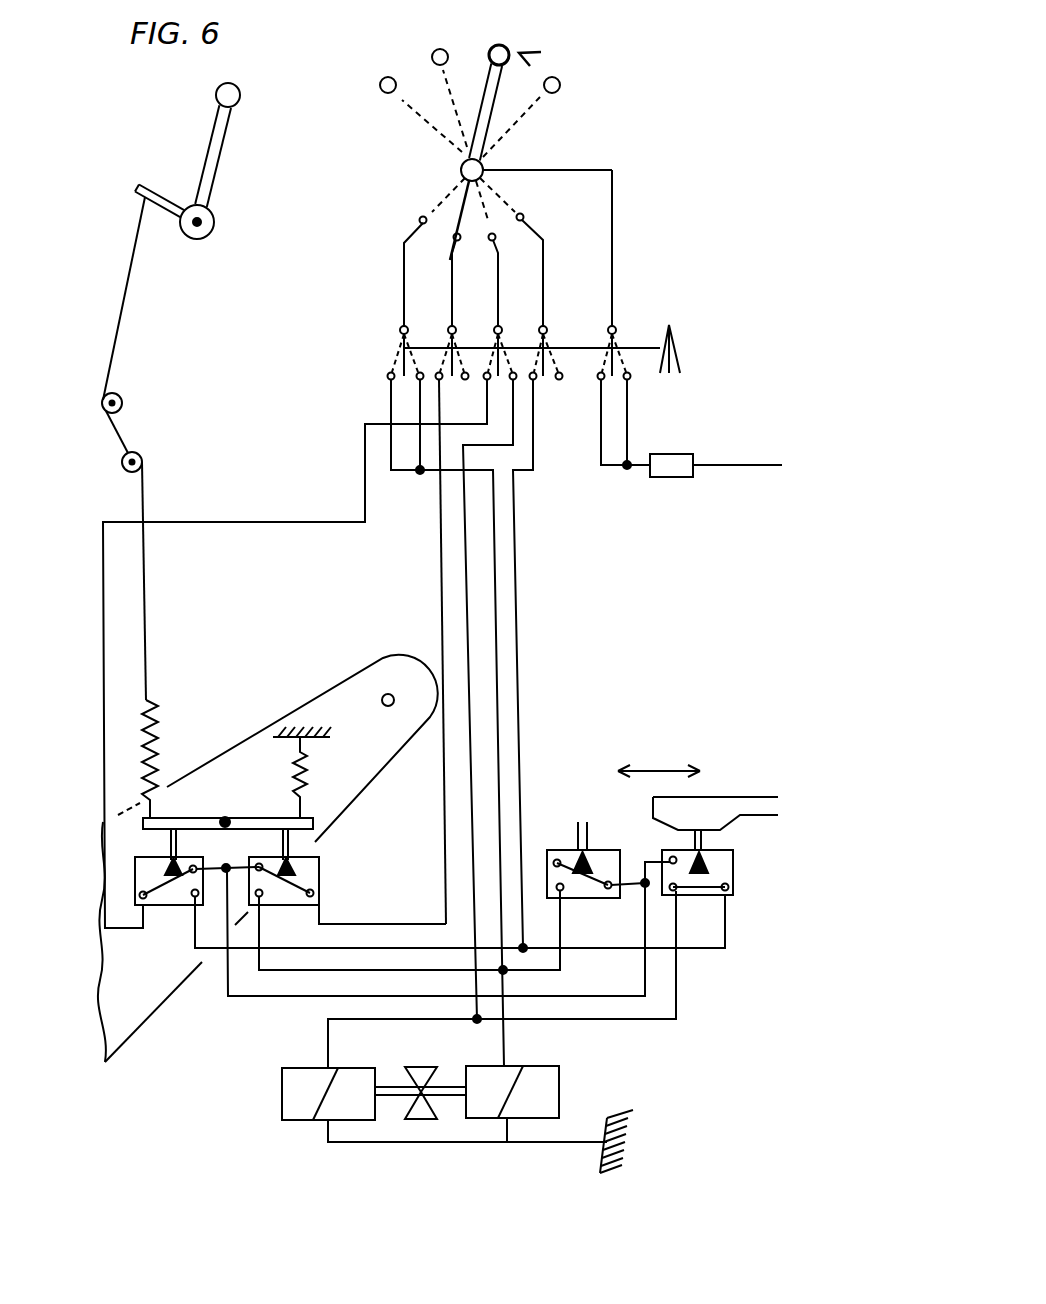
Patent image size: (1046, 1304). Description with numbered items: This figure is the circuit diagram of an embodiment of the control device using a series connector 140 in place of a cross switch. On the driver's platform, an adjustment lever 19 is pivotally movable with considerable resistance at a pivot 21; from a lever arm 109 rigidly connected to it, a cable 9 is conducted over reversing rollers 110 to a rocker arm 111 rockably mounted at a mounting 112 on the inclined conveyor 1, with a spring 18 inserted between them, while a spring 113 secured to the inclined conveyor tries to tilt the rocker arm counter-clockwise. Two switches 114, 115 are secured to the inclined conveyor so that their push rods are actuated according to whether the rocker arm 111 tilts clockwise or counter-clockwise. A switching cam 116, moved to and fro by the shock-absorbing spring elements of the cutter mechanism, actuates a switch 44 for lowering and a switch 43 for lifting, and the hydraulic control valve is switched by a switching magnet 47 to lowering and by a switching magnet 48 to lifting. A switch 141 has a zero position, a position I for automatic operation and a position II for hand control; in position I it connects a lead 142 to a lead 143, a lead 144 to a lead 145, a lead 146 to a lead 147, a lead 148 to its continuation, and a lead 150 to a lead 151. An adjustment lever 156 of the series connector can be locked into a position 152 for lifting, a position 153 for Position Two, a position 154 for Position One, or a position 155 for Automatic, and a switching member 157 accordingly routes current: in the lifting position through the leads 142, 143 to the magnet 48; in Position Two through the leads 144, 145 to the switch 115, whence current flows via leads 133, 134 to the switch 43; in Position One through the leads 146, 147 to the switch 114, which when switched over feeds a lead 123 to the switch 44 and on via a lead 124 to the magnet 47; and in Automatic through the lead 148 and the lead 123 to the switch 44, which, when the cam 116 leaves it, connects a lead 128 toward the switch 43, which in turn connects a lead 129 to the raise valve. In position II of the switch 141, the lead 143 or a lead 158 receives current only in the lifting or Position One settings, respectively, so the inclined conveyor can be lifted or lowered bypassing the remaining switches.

The inclined conveyor 1 is at (330, 695).
The cable 9 is at (125, 327).
The spring 18 is at (160, 723).
The adjustment lever 19 is at (208, 142).
The pivot 21 is at (205, 212).
The switch for lifting 43 is at (548, 850).
The switch for lowering 44 is at (732, 852).
The switching magnet for lowering 47 is at (282, 1072).
The switching magnet for lifting 48 is at (558, 1073).
The lever arm 109 is at (157, 172).
The reversing rollers 110 is at (135, 448).
The rocker arm 111 is at (197, 807).
The rocker arm mounting 112 is at (230, 817).
The spring 113 is at (308, 768).
The switch 114 is at (173, 908).
The switch 115 is at (318, 877).
The switching cam 116 is at (732, 807).
The lead 123 is at (687, 945).
The lead 124 is at (675, 1013).
The lead 128 is at (642, 865).
The lead 129 is at (560, 968).
The lead 133 is at (226, 867).
The lead 134 is at (268, 1000).
The series connector 140 is at (532, 154).
The switch 141 is at (633, 343).
The lead 142 is at (403, 317).
The lead 143 is at (420, 410).
The lead 144 is at (452, 317).
The lead 145 is at (441, 530).
The lead 146 is at (498, 317).
The lead 147 is at (365, 478).
The lead 148 is at (545, 320).
The lead 150 is at (612, 244).
The lead 151 is at (693, 467).
The locked position for lifting 152 is at (560, 85).
The locked position for Position Two 153 is at (505, 43).
The locked position for Position One 154 is at (447, 53).
The locked position for Automatic 155 is at (384, 77).
The adjustment lever 156 is at (495, 95).
The switching member 157 is at (450, 202).
The lead 158 is at (466, 580).